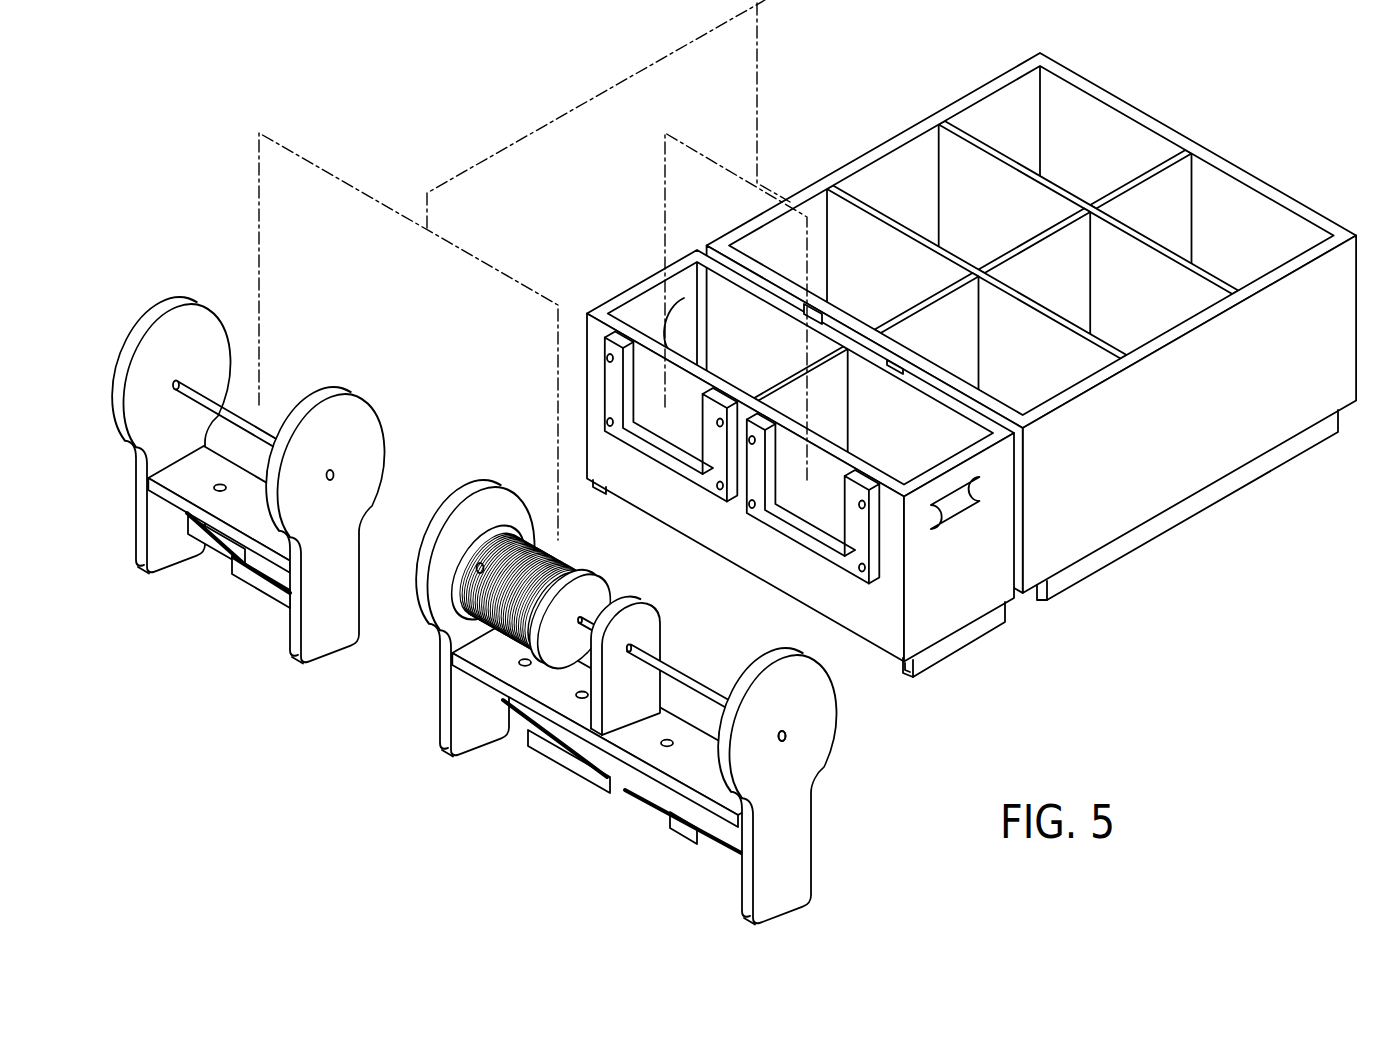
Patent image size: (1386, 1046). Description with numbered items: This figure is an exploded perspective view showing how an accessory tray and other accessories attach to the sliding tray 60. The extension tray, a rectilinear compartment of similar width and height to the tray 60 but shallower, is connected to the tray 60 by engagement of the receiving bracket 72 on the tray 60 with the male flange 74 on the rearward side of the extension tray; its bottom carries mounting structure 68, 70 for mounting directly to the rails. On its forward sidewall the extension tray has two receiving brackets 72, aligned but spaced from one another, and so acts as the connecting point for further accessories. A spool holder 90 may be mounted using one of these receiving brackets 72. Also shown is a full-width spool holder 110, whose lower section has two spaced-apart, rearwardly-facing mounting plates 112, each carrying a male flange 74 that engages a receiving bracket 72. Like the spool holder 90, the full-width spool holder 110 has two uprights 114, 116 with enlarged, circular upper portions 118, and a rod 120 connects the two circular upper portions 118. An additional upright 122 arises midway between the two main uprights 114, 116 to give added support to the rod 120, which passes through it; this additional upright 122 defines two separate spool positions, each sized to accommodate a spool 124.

The tray 60 is at (1219, 149).
The mounting structure 68 is at (598, 490).
The mounting structure 70 is at (1126, 546).
The receiving bracket 72 is at (906, 363).
The male flange 74 is at (830, 322).
The spool holder 90 is at (152, 302).
The full-width spool holder 110 is at (650, 670).
The mounting plates 112 is at (692, 832).
The upright 114 is at (446, 713).
The upright 116 is at (786, 858).
The circular upper portions 118 is at (487, 483).
The rod 120 is at (681, 669).
The additional upright 122 is at (630, 610).
The spool 124 is at (541, 566).